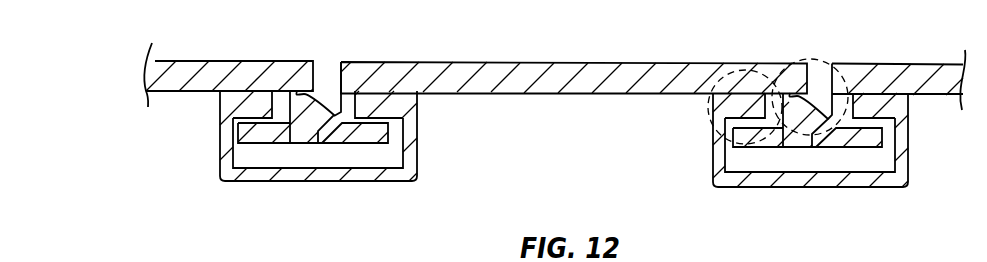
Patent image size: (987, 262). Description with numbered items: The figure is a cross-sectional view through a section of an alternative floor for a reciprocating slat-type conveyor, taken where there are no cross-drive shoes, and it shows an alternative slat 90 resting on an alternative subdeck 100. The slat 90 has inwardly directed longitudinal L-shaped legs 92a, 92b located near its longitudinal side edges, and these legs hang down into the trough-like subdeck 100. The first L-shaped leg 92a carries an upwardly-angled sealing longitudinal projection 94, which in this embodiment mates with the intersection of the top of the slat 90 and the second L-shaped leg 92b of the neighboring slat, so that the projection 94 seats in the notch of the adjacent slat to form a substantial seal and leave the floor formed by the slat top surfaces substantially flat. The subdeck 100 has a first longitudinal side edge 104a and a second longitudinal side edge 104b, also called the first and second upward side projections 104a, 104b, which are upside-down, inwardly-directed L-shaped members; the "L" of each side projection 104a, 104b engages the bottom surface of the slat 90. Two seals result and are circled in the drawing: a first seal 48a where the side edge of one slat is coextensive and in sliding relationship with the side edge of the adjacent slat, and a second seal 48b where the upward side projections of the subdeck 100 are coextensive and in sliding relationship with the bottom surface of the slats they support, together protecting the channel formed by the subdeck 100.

The slat 90 is at (212, 67).
The upwardly-angled sealing longitudinal projection 94 is at (331, 112).
The subdeck 100 is at (414, 146).
The first longitudinal side edge 104a is at (414, 100).
The second longitudinal side edge 104b is at (228, 107).
The first L-shaped leg 92a is at (337, 143).
The second L-shaped leg 92b is at (265, 143).
The first seal 48a is at (818, 56).
The second seal 48b is at (710, 108).